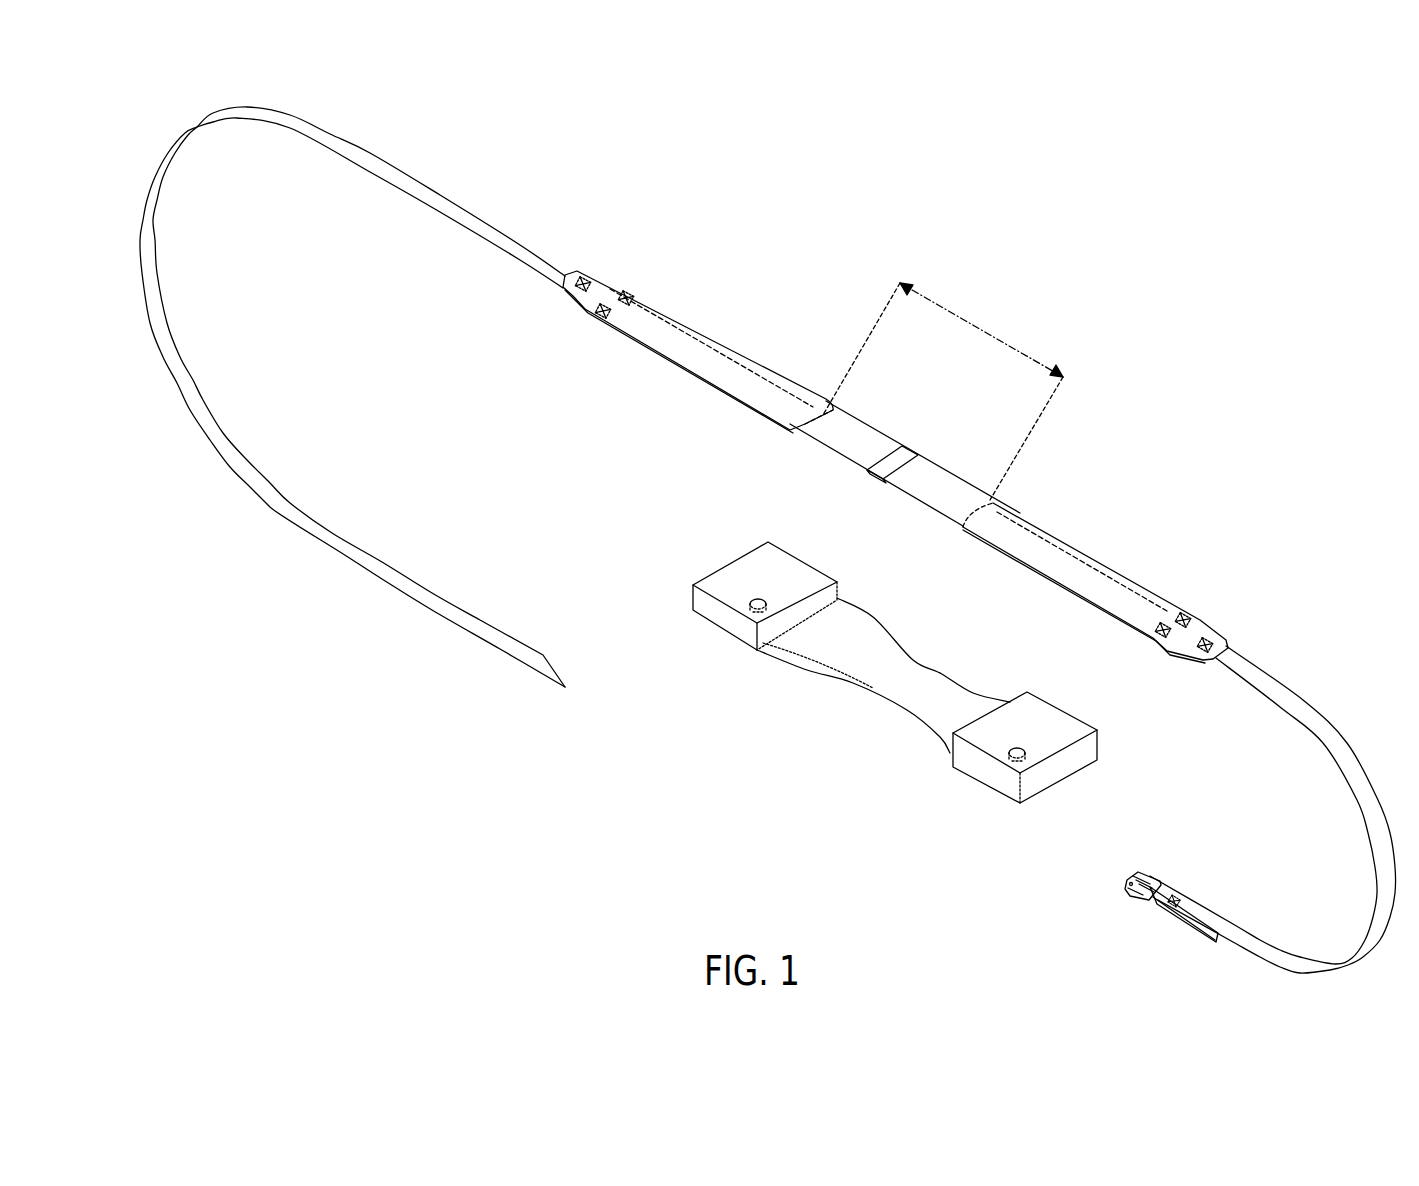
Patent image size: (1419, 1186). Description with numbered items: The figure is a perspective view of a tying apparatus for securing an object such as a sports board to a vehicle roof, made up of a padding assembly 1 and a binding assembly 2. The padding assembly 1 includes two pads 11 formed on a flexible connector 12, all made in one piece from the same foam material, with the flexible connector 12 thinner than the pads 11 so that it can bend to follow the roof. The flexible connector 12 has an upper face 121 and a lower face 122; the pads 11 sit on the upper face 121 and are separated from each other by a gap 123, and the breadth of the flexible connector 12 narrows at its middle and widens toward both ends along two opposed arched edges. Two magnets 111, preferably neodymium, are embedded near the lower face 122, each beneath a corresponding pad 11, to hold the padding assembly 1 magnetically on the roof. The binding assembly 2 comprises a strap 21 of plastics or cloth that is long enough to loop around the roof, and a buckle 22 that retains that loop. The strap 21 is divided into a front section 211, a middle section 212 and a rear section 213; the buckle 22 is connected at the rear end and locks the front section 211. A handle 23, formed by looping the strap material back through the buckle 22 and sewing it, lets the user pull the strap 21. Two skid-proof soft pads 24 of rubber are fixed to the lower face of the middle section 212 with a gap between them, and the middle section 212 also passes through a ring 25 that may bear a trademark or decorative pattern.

The padding assembly 1 is at (761, 694).
The pad 11 is at (730, 570).
The magnet 111 is at (750, 605).
The flexible connector 12 is at (870, 688).
The upper face 121 is at (847, 640).
The lower face 122 is at (913, 723).
The gap 123 is at (987, 681).
The binding assembly 2 is at (588, 240).
The strap 21 is at (1243, 952).
The front section 211 is at (1253, 673).
The middle section 212 is at (857, 430).
The rear section 213 is at (452, 212).
The buckle 22 is at (1121, 892).
The handle 23 is at (1197, 927).
The soft pad 24 is at (688, 377).
The ring 25 is at (887, 462).